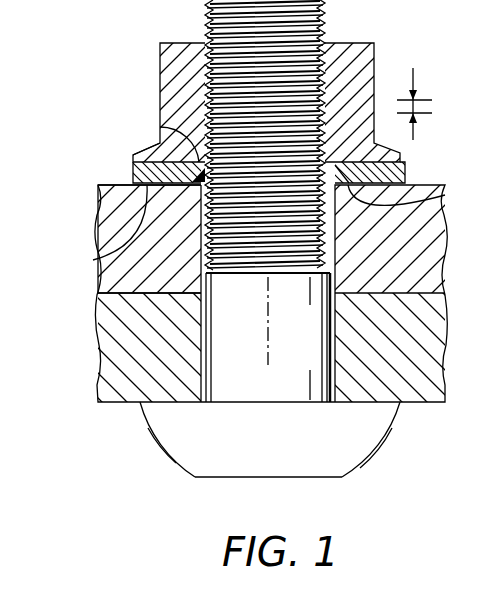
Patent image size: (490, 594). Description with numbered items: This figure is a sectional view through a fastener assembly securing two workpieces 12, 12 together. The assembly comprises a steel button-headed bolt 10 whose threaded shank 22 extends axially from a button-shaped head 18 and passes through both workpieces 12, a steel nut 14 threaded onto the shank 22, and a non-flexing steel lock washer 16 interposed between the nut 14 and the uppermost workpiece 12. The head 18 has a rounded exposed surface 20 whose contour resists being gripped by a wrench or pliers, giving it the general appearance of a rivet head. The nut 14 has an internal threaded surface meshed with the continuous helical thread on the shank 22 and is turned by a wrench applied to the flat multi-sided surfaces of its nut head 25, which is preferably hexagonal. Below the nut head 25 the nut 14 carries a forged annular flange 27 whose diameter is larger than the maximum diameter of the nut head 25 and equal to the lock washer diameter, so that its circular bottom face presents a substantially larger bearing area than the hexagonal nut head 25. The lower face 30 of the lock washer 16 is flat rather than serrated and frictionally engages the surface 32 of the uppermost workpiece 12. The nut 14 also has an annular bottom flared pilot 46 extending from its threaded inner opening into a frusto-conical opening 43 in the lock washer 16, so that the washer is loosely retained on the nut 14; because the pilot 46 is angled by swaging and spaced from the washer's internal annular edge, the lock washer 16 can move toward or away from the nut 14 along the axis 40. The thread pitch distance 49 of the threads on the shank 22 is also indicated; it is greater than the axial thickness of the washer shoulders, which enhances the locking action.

The button-headed bolt 10 is at (281, 458).
The workpiece 12 is at (102, 392).
The nut 14 is at (160, 84).
The lock washer 16 is at (405, 168).
The button-shaped head 18 is at (178, 470).
The rounded exposed surface 20 is at (356, 472).
The threaded shank 22 is at (205, 14).
The nut head 25 is at (273, 88).
The annular flange 27 is at (133, 156).
The lower face of the lock washer 30 is at (100, 252).
The surface of the uppermost workpiece 32 is at (110, 184).
The axis 40 is at (272, 312).
The frusto-conical opening 43 is at (420, 199).
The flared pilot 46 is at (156, 126).
The thread pitch distance 49 is at (413, 70).